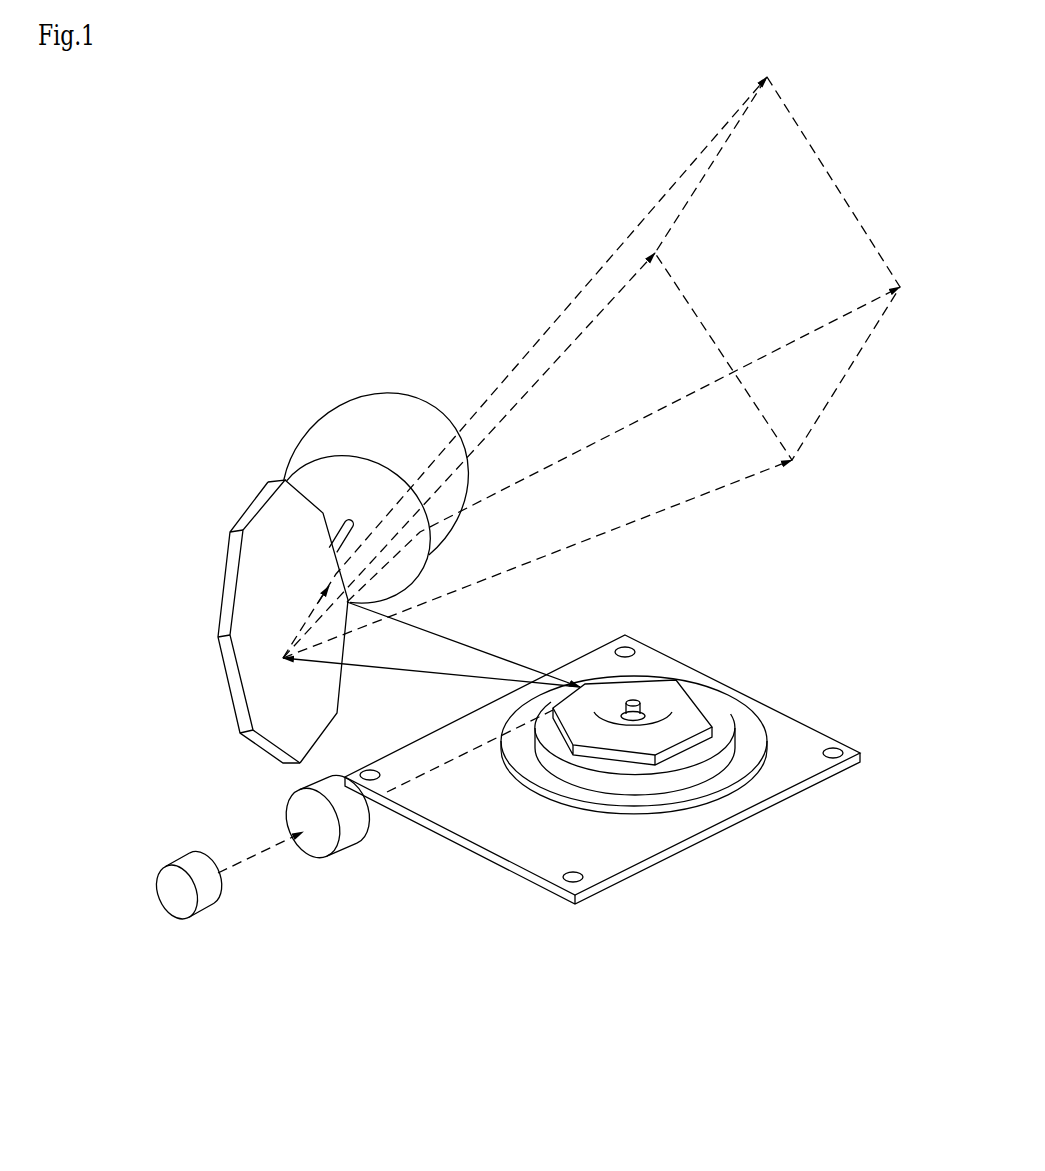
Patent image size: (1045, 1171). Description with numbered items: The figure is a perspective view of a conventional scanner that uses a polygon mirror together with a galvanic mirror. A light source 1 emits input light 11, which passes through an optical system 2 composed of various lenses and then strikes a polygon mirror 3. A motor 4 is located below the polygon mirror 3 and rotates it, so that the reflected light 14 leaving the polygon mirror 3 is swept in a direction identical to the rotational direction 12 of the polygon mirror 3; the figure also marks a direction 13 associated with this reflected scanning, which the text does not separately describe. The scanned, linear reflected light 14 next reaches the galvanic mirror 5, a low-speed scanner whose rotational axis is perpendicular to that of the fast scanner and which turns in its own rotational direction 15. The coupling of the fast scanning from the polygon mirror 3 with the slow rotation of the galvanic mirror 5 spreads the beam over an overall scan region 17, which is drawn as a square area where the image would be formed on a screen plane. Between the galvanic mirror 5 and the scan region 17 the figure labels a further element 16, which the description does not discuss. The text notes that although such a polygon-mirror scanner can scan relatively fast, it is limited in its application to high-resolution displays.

The light source 1 is at (203, 893).
The optical system 2 is at (350, 832).
The polygon mirror 3 is at (673, 686).
The motor 4 is at (730, 740).
The galvanic mirror 5 is at (247, 585).
The input light 11 is at (260, 850).
The rotational direction of the polygon mirror 12 is at (597, 710).
The scanning beam 13 is at (487, 688).
The reflected light 14 is at (432, 675).
The rotational direction of the galvanic mirror 15 is at (273, 527).
The cylindrical lens 16 is at (370, 563).
The overall scan region 17 is at (832, 213).